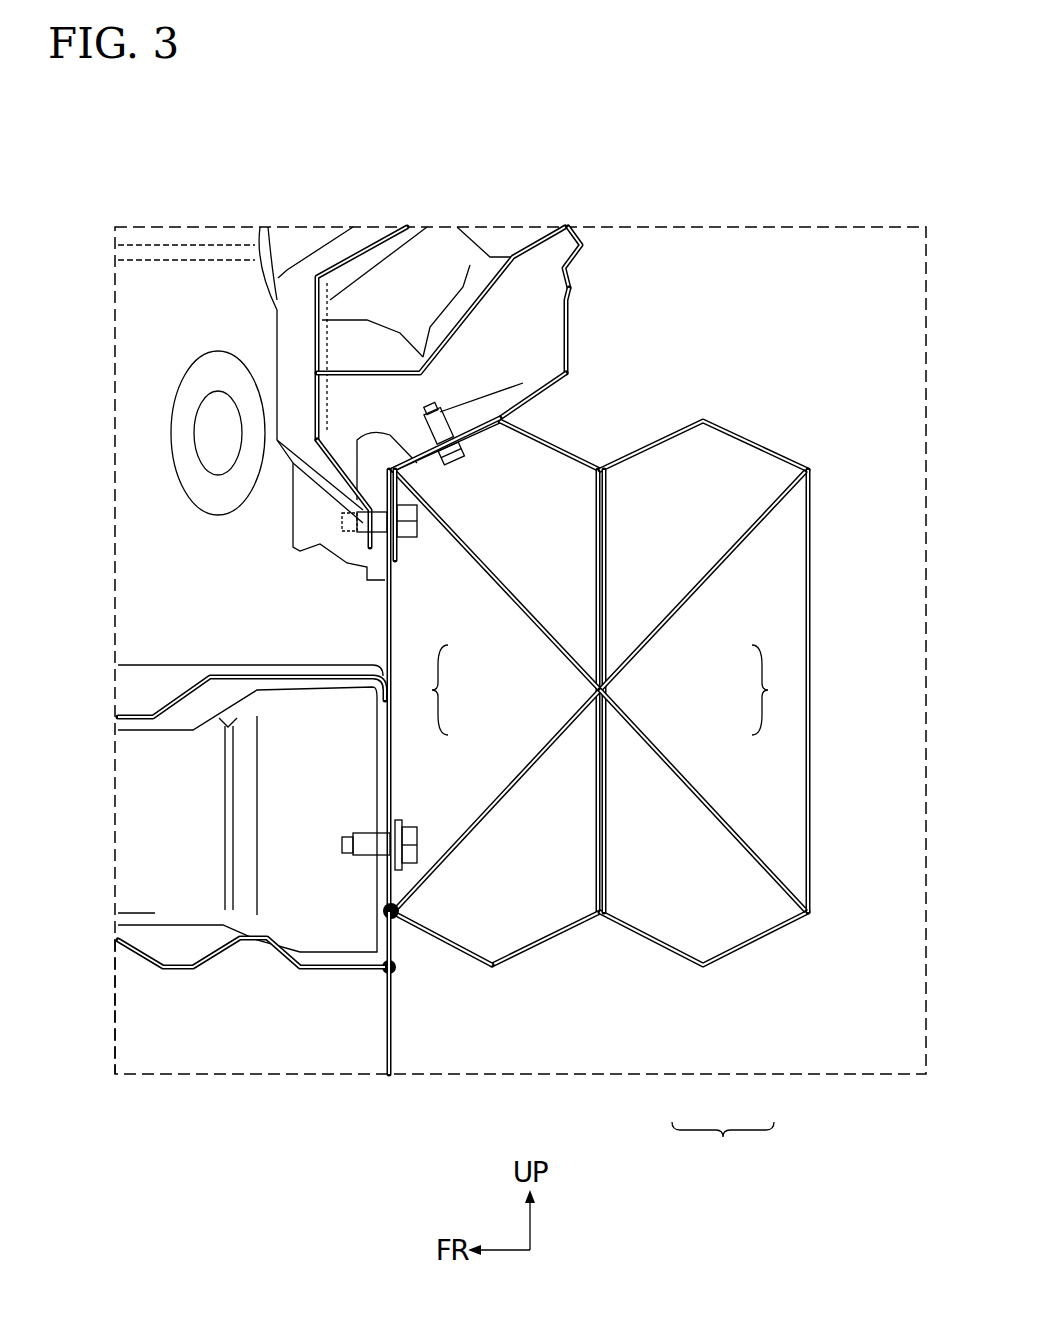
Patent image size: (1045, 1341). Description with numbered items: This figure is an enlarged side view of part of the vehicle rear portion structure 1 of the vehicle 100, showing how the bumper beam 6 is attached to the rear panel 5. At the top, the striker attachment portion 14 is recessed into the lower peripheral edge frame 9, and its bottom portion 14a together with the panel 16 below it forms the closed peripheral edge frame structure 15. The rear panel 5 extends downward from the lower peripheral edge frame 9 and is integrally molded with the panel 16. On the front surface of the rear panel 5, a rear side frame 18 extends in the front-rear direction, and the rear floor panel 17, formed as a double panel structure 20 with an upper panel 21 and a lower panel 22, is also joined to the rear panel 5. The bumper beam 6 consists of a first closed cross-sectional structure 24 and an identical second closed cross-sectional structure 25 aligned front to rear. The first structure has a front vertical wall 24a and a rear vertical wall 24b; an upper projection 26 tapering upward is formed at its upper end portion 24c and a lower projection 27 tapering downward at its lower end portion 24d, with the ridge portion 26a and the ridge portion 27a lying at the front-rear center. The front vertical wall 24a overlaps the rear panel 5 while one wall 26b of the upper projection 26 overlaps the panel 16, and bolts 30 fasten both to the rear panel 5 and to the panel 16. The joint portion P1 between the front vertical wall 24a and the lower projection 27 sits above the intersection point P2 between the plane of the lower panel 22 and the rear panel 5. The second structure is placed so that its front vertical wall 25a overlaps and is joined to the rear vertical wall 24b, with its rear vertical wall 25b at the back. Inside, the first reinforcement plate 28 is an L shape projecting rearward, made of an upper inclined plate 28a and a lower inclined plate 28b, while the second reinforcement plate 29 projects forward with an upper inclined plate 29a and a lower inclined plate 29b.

The vehicle rear portion structure 1 is at (590, 713).
The rear panel 5 is at (394, 1053).
The bumper beam 6 is at (590, 785).
The lower peripheral edge frame 9 is at (547, 232).
The striker attachment portion 14 is at (431, 322).
The bottom portion 14a is at (463, 290).
The peripheral edge frame structure 15 is at (583, 257).
The panel 16 is at (567, 316).
The rear floor panel 17 is at (123, 968).
The rear side frame 18 is at (153, 910).
The double panel structure 20 is at (134, 1069).
The upper panel 21 is at (375, 672).
The lower panel 22 is at (300, 972).
The first closed cross-sectional structure 24 is at (490, 759).
The front vertical wall 24a is at (384, 604).
The rear vertical wall 24b is at (595, 600).
The upper end portion 24c is at (599, 470).
The lower end portion 24d is at (399, 922).
The second closed cross-sectional structure 25 is at (752, 773).
The front vertical wall 25a is at (607, 548).
The rear vertical wall 25b is at (856, 691).
The upper projection 26 is at (488, 443).
The ridge portion 26a is at (500, 417).
The one wall 26b is at (420, 467).
The lower projection 27 is at (496, 989).
The ridge portion 27a is at (497, 975).
The first reinforcement plate 28 is at (497, 691).
The upper inclined plate 28a is at (499, 587).
The lower inclined plate 28b is at (513, 781).
The second reinforcement plate 29 is at (702, 691).
The upper inclined plate 29a is at (670, 623).
The lower inclined plate 29b is at (640, 722).
The bolt 30 is at (472, 460).
The vehicle 100 is at (262, 228).
The joint portion P1 is at (386, 914).
The intersection point P2 is at (386, 969).